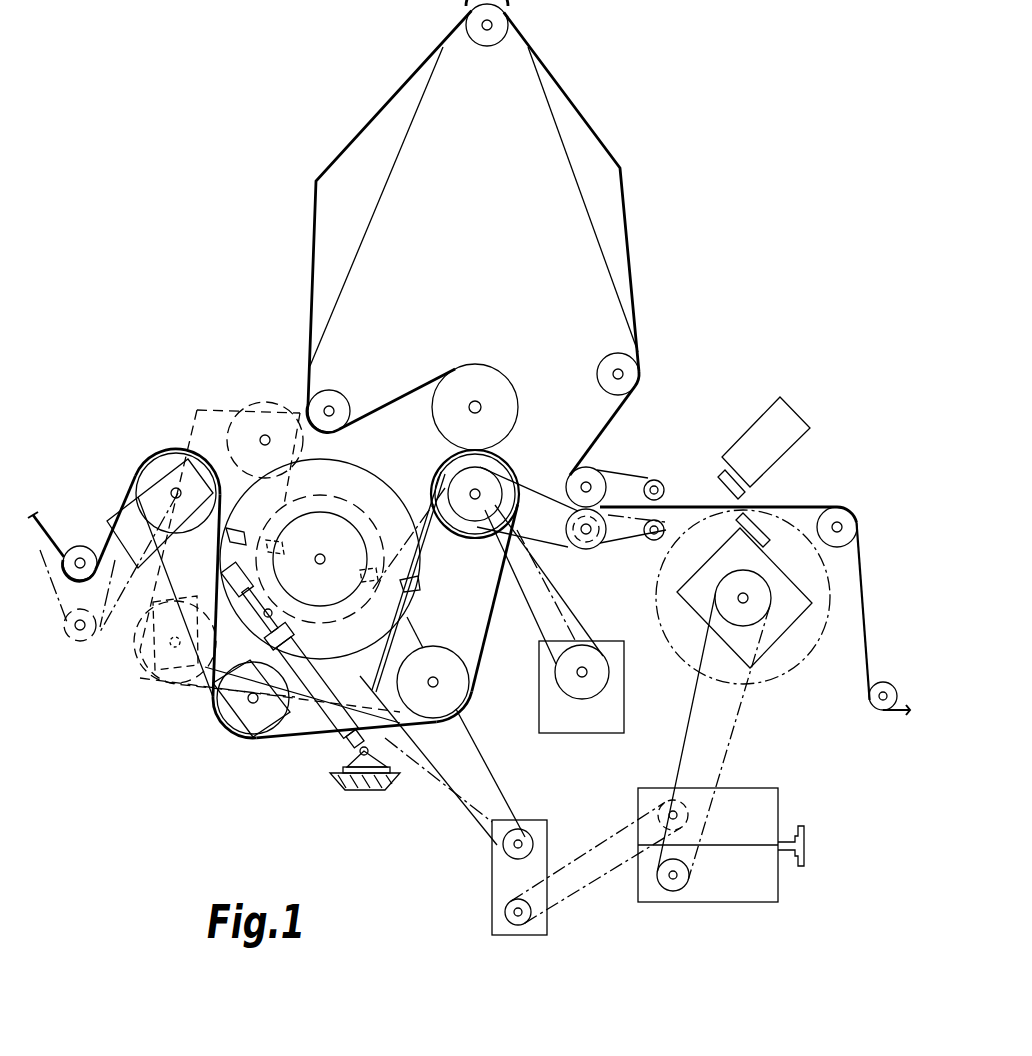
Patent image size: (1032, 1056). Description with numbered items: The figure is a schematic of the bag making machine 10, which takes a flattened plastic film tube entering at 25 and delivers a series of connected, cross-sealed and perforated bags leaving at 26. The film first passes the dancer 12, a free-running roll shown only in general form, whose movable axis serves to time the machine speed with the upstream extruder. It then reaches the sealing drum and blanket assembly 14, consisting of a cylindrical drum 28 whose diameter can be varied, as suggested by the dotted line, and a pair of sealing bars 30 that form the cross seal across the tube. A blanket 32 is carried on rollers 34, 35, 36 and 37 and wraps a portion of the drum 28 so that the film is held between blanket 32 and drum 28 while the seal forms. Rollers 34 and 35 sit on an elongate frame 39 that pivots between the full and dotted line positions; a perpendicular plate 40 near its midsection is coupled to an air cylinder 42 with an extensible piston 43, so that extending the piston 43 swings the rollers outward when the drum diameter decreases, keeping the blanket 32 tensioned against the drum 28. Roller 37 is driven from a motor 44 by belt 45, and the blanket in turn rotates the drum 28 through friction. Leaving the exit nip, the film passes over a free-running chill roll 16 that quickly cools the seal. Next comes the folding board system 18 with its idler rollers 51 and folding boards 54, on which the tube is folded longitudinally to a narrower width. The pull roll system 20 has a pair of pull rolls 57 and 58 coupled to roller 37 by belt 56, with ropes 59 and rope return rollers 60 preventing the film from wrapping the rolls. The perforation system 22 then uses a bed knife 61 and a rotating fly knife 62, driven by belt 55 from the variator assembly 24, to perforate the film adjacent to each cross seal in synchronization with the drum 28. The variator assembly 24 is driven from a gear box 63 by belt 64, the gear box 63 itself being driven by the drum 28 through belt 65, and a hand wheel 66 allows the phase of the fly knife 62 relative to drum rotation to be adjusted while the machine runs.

The bag making machine 10 is at (382, 844).
The dancer 12 is at (55, 628).
The sealing drum and blanket assembly 14 is at (400, 483).
The chill roll 16 is at (494, 380).
The folding board system 18 is at (490, 164).
The pull roll system 20 is at (672, 460).
The perforation system 22 is at (770, 495).
The variator assembly 24 is at (686, 905).
The flattened plastic film tube entry 25 is at (48, 528).
The bag exit 26 is at (866, 611).
The cylindrical drum 28 is at (356, 474).
The sealing bars 30 is at (236, 530).
The blanket 32 is at (282, 750).
The roller 34 is at (172, 452).
The roller 35 is at (240, 738).
The roller 36 is at (466, 687).
The roller 37 is at (488, 470).
The elongate frame 39 is at (142, 574).
The perpendicular plate 40 is at (204, 682).
The air cylinder 42 is at (342, 698).
The extensible piston 43 is at (292, 618).
The motor 44 is at (622, 699).
The belt 45 is at (583, 617).
The idler rollers 51 is at (482, 40).
The folding boards 54 is at (322, 203).
The belt 55 is at (738, 736).
The belt 56 is at (530, 490).
The pull roll 57 is at (592, 477).
The pull roll 58 is at (582, 552).
The ropes 59 is at (655, 480).
The rope return rollers 60 is at (662, 520).
The bed knife 61 is at (758, 430).
The fly knife 62 is at (765, 588).
The gear box 63 is at (492, 876).
The belt 64 is at (596, 890).
The belt 65 is at (482, 761).
The hand wheel 66 is at (806, 841).